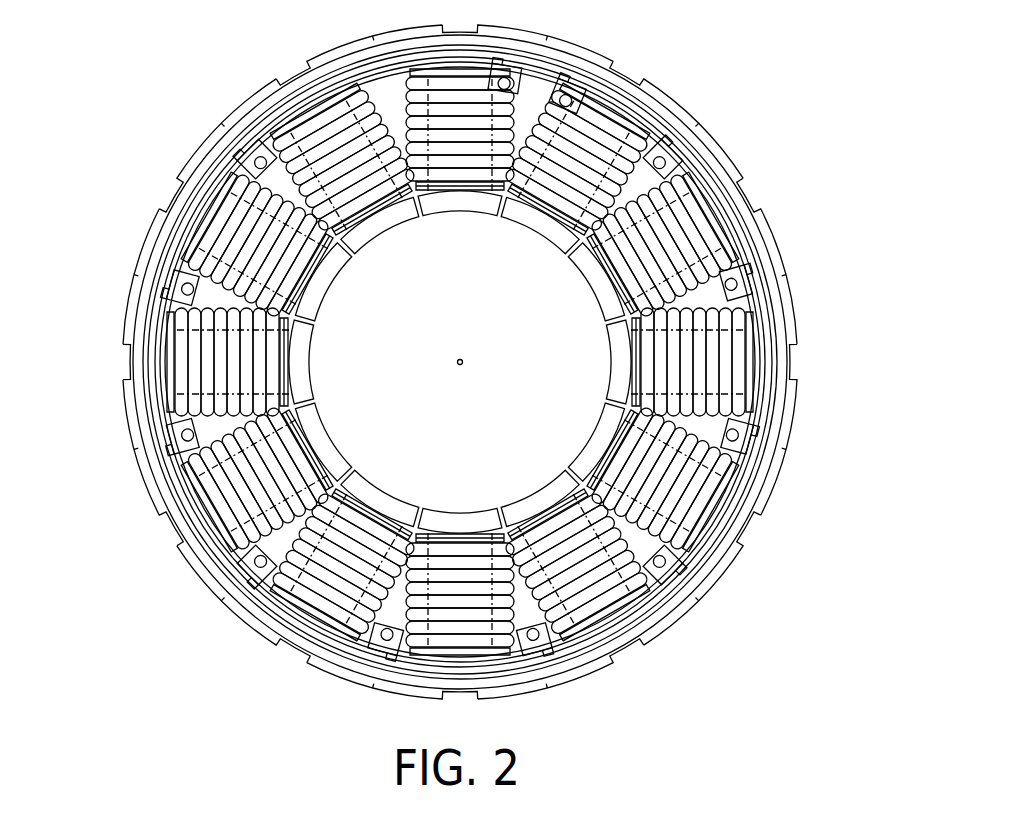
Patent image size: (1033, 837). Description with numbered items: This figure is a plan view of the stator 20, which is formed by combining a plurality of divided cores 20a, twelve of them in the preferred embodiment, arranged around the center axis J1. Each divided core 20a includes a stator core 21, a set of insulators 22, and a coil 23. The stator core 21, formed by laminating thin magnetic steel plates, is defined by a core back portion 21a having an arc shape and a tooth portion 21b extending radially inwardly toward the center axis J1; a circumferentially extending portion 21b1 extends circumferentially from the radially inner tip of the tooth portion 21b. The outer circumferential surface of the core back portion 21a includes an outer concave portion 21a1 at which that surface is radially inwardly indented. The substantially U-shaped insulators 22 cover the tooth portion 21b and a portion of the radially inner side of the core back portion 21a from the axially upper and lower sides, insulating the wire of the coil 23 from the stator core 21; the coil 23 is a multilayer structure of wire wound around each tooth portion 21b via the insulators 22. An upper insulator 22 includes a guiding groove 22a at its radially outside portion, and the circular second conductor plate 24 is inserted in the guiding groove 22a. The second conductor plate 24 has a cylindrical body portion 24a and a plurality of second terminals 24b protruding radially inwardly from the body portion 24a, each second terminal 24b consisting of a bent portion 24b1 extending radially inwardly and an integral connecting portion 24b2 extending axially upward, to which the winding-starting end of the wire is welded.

The stator 20 is at (84, 45).
The divided core 20a is at (688, 92).
The stator core 21 is at (140, 302).
The core back portion 21a is at (150, 250).
The outer concave portion 21a1 is at (127, 352).
The tooth portion 21b is at (300, 323).
The circumferentially extending portion 21b1 is at (300, 419).
The insulator 22 is at (207, 507).
The guiding groove 22a is at (182, 492).
The coil 23 is at (350, 568).
The second conductor plate 24 is at (748, 257).
The body portion 24a is at (720, 530).
The second terminal 24b is at (743, 283).
The bent portion 24b1 is at (750, 437).
The connecting portion 24b2 is at (745, 452).
The center axis J1 is at (463, 365).